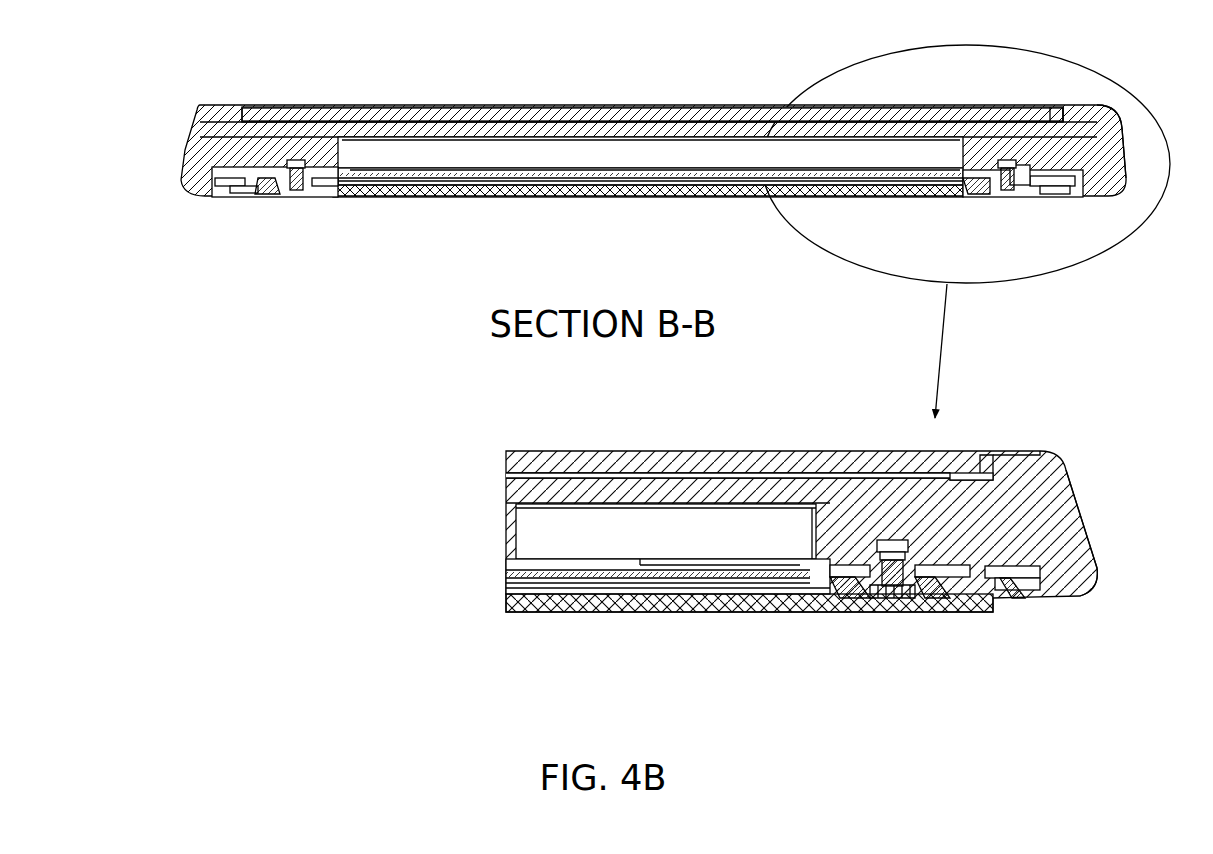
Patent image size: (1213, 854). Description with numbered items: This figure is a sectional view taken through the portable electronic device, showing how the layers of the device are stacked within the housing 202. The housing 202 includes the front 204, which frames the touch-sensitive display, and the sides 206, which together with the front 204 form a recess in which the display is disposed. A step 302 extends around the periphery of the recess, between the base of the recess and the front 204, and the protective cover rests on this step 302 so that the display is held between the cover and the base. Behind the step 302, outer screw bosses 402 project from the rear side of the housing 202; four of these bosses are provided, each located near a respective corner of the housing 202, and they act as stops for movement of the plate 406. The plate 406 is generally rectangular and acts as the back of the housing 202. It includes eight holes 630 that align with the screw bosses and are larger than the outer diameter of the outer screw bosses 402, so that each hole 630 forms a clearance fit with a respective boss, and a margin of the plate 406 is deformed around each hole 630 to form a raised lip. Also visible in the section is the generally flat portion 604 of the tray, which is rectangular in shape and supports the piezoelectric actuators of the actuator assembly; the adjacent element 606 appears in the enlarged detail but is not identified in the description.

The housing 202 is at (200, 100).
The front 204 is at (1073, 105).
The sides 206 is at (1110, 118).
The step 302 is at (960, 118).
The outer screw bosses 402 is at (1030, 200).
The plate 406 is at (420, 198).
The generally flat portion 604 is at (972, 200).
The fastener 606 is at (985, 200).
The holes 630 is at (893, 540).